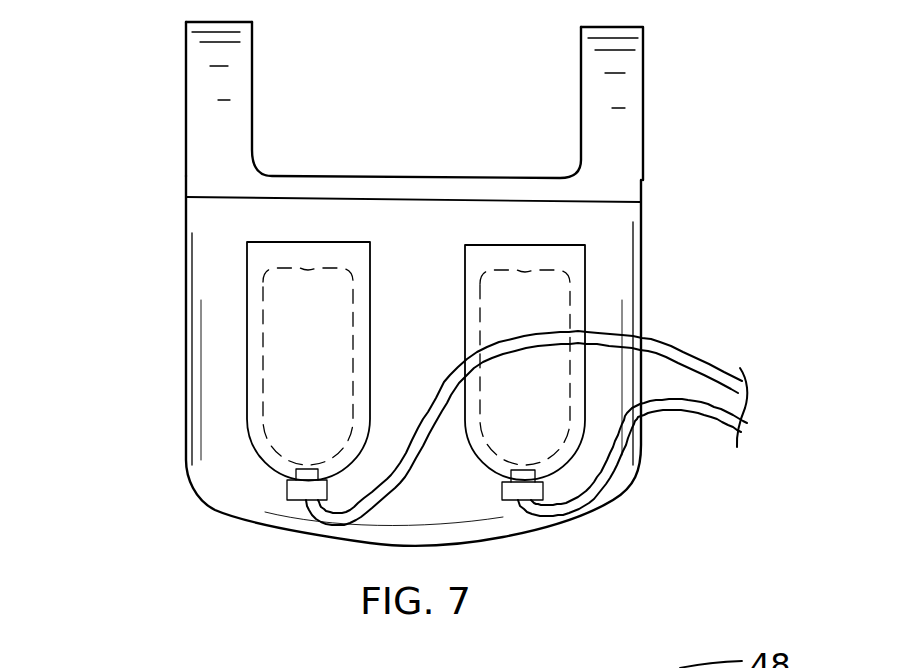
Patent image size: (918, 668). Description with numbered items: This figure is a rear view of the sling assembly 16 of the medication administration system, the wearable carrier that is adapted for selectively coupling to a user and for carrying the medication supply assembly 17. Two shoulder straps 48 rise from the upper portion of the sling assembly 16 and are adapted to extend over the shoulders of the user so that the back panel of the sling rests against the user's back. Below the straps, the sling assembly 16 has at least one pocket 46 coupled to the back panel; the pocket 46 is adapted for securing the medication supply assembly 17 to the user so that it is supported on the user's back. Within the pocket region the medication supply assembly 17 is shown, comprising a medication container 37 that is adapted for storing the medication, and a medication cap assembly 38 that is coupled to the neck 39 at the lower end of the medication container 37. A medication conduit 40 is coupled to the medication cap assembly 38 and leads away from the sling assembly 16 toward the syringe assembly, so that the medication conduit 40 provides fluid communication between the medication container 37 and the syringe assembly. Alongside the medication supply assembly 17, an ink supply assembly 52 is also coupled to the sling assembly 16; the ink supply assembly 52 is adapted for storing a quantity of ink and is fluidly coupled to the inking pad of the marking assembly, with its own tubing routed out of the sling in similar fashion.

The sling assembly 16 is at (708, 62).
The shoulder straps 48 is at (230, 55).
The medication supply assembly 17 is at (212, 296).
The ink supply assembly 52 is at (626, 281).
The pocket 46 is at (208, 378).
The medication container 37 is at (288, 397).
The neck 39 is at (285, 460).
The medication cap assembly 38 is at (250, 497).
The medication conduit 40 is at (328, 512).